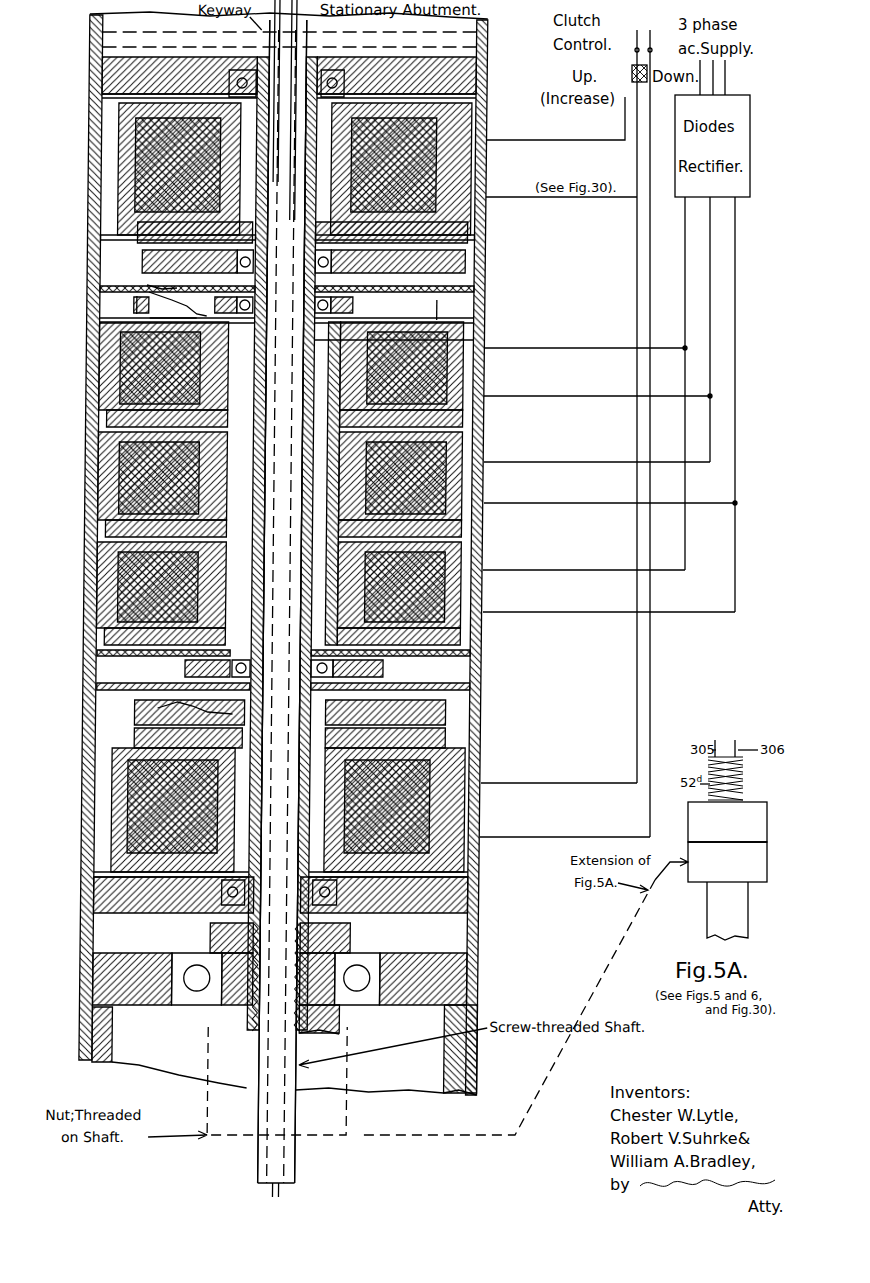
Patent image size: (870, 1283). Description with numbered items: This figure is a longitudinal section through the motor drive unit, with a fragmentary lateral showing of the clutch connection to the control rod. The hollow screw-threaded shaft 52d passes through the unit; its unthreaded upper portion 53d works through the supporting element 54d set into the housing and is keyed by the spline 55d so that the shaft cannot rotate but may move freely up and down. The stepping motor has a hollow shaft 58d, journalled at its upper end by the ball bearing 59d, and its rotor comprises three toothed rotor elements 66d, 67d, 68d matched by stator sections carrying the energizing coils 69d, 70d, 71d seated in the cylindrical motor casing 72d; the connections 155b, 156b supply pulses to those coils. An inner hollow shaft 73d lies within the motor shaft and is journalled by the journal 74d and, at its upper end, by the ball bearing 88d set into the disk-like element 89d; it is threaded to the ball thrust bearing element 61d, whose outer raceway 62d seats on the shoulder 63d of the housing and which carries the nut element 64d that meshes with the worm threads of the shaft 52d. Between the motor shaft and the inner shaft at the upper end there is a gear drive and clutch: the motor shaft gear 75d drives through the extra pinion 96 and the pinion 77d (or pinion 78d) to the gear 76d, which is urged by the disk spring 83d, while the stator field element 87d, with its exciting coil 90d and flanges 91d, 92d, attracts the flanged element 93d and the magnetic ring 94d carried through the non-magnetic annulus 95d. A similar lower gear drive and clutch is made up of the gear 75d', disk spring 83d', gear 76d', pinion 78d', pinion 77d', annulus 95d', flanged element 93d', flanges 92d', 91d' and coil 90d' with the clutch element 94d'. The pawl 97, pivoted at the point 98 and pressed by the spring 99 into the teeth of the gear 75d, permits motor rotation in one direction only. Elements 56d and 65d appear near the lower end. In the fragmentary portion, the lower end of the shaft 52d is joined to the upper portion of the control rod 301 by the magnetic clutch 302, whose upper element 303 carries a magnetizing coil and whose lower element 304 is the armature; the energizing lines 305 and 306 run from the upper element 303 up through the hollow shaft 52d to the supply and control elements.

The supporting element 54d is at (140, 32).
The spline 55d is at (140, 47).
The unthreaded upper portion of worm screw rod 53d is at (120, 75).
The ball bearing 88d is at (120, 96).
The stator field element 87d is at (128, 168).
The flanged element 93d is at (146, 211).
The gear 76d is at (138, 261).
The pivot point 98 is at (150, 288).
The spring 99 is at (140, 304).
The pawl 97 is at (153, 318).
The motor shaft gear 75d is at (256, 322).
The energizing coil 69d is at (124, 385).
The rotor element 66d is at (124, 418).
The energizing coil 70d is at (124, 478).
The motor casing 72d is at (124, 510).
The rotor element 67d is at (124, 528).
The energizing coil 71d is at (124, 580).
The rotor element 68d is at (124, 636).
The motor shaft gear 75d' is at (132, 656).
The disk spring 83d' is at (132, 671).
The gear 76d' is at (141, 704).
The clutch element 94d' is at (134, 801).
The outer raceway 62d is at (135, 980).
The shoulder 63d is at (113, 1020).
The ball thrust bearing element 61d is at (212, 992).
The nut element 64d is at (225, 1000).
The clutch energizing line 305 is at (284, 1190).
The clutch energizing line 306 is at (316, 1190).
The disk-like element 89d is at (420, 80).
The field element flange 91d is at (427, 169).
The exciting coil 90d is at (437, 165).
The field element flange 92d is at (480, 186).
The non-magnetic annulus 95d is at (419, 223).
The magnetic ring 94d is at (427, 255).
The pinion 77d is at (489, 262).
The disk spring 83d is at (494, 289).
The extra pinion element 96 is at (440, 312).
The pinion 78d is at (417, 337).
The ball bearing 59d is at (462, 365).
The control lead 155b is at (472, 408).
The screw-threaded shaft 52d is at (472, 420).
The control lead 156b is at (472, 440).
The hollow motor shaft 58d is at (472, 552).
The inner hollow shaft 73d is at (462, 583).
The pinion 78d' is at (423, 660).
The pinion 77d' is at (418, 691).
The non-magnetic annulus 95d' is at (494, 739).
The flanged element 93d' is at (309, 819).
The field element flange 92d' is at (424, 810).
The exciting coil 90d' is at (434, 806).
The field element flange 91d' is at (485, 829).
The journal 74d is at (477, 895).
The nut 56d is at (478, 975).
The nut 65d is at (358, 1110).
The upper clutch element 303 is at (755, 817).
The magnetic clutch 302 is at (762, 843).
The lower clutch element 304 is at (755, 857).
The control rod 301 is at (735, 905).